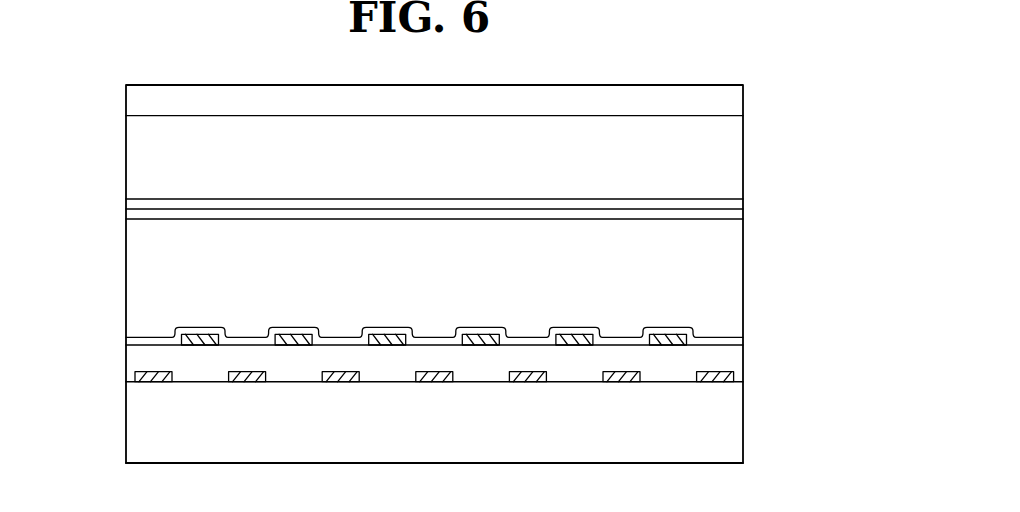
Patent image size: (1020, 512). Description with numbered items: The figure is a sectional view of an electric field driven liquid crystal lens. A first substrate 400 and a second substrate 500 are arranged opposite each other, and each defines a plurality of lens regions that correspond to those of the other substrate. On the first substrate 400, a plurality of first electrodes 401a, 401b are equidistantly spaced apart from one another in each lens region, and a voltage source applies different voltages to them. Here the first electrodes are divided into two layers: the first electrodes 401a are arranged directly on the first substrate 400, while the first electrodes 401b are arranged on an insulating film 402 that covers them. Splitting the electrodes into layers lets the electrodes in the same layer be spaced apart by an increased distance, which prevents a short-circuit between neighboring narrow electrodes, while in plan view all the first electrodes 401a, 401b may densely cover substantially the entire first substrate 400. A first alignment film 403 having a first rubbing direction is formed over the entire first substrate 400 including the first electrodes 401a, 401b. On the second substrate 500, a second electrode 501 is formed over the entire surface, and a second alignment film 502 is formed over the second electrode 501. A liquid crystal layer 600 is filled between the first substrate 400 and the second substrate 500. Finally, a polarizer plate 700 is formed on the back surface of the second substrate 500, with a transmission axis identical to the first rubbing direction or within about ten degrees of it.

The first substrate 400 is at (132, 425).
The first electrodes 401a is at (133, 374).
The first electrodes 401b is at (669, 338).
The insulating film 402 is at (736, 363).
The first alignment film 403 is at (736, 340).
The second substrate 500 is at (735, 153).
The second electrode 501 is at (736, 200).
The second alignment film 502 is at (736, 210).
The liquid crystal layer 600 is at (735, 270).
The polarizer plate 700 is at (734, 101).